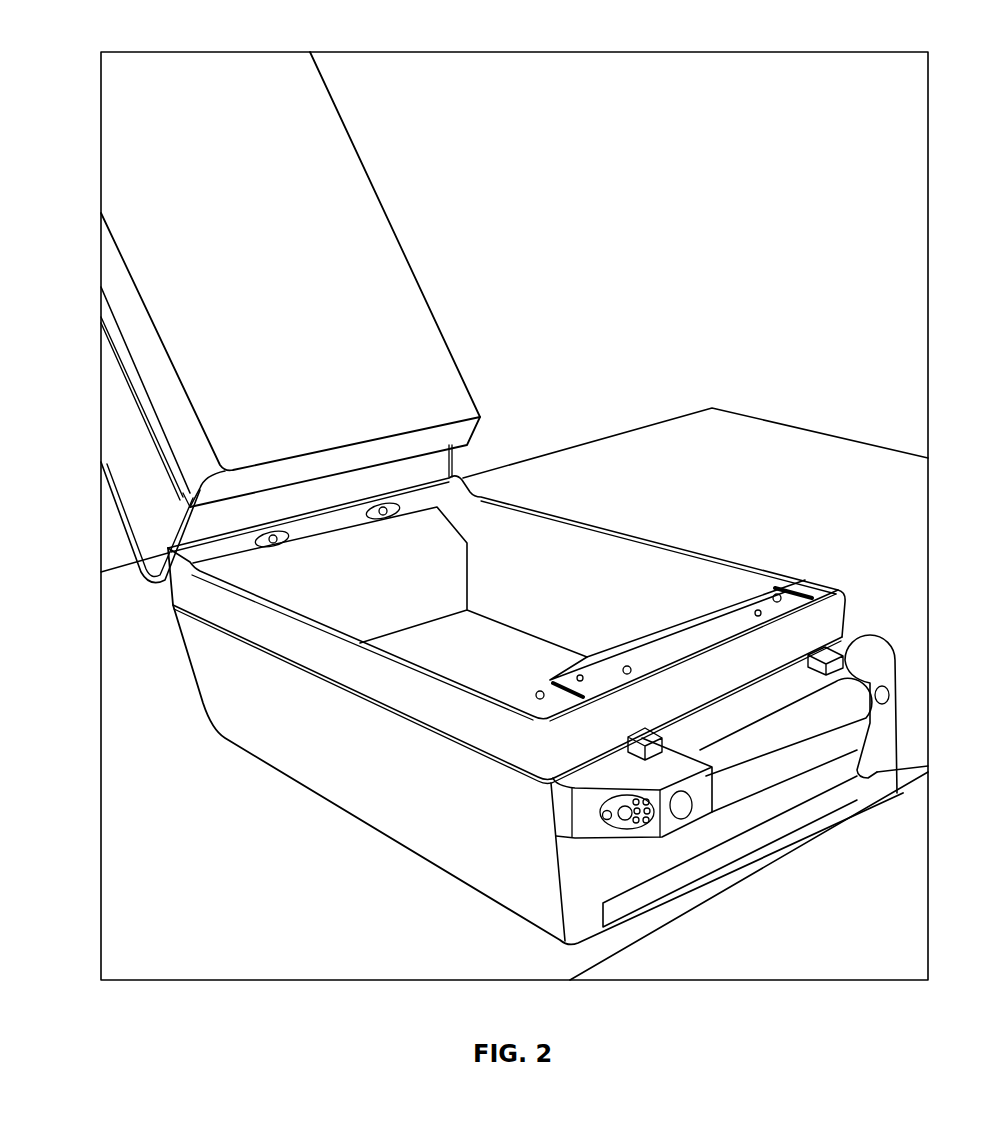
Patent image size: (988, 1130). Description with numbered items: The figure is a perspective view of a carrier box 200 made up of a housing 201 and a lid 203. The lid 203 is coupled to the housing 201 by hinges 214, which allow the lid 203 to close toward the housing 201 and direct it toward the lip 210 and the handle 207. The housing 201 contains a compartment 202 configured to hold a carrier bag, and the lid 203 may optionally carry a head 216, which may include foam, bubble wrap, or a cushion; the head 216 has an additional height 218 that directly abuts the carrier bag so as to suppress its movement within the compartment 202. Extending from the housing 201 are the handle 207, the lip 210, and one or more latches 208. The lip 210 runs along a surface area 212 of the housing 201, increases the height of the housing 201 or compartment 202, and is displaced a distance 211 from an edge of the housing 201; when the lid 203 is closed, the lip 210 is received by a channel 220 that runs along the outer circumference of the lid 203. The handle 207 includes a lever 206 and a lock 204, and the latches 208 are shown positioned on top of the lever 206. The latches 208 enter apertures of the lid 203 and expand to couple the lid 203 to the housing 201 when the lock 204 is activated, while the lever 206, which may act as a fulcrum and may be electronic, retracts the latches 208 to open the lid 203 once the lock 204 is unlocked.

The carrier box 200 is at (52, 512).
The housing 201 is at (173, 603).
The compartment 202 is at (538, 552).
The lid 203 is at (110, 483).
The lock 204 is at (700, 848).
The lever 206 is at (836, 763).
The handle 207 is at (808, 832).
The latches 208 is at (613, 771).
The lip 210 is at (255, 624).
The distance 211 is at (783, 654).
The surface area 212 is at (387, 742).
The hinges 214 is at (178, 556).
The head 216 is at (256, 112).
The additional height 218 is at (145, 318).
The channel 220 is at (117, 433).